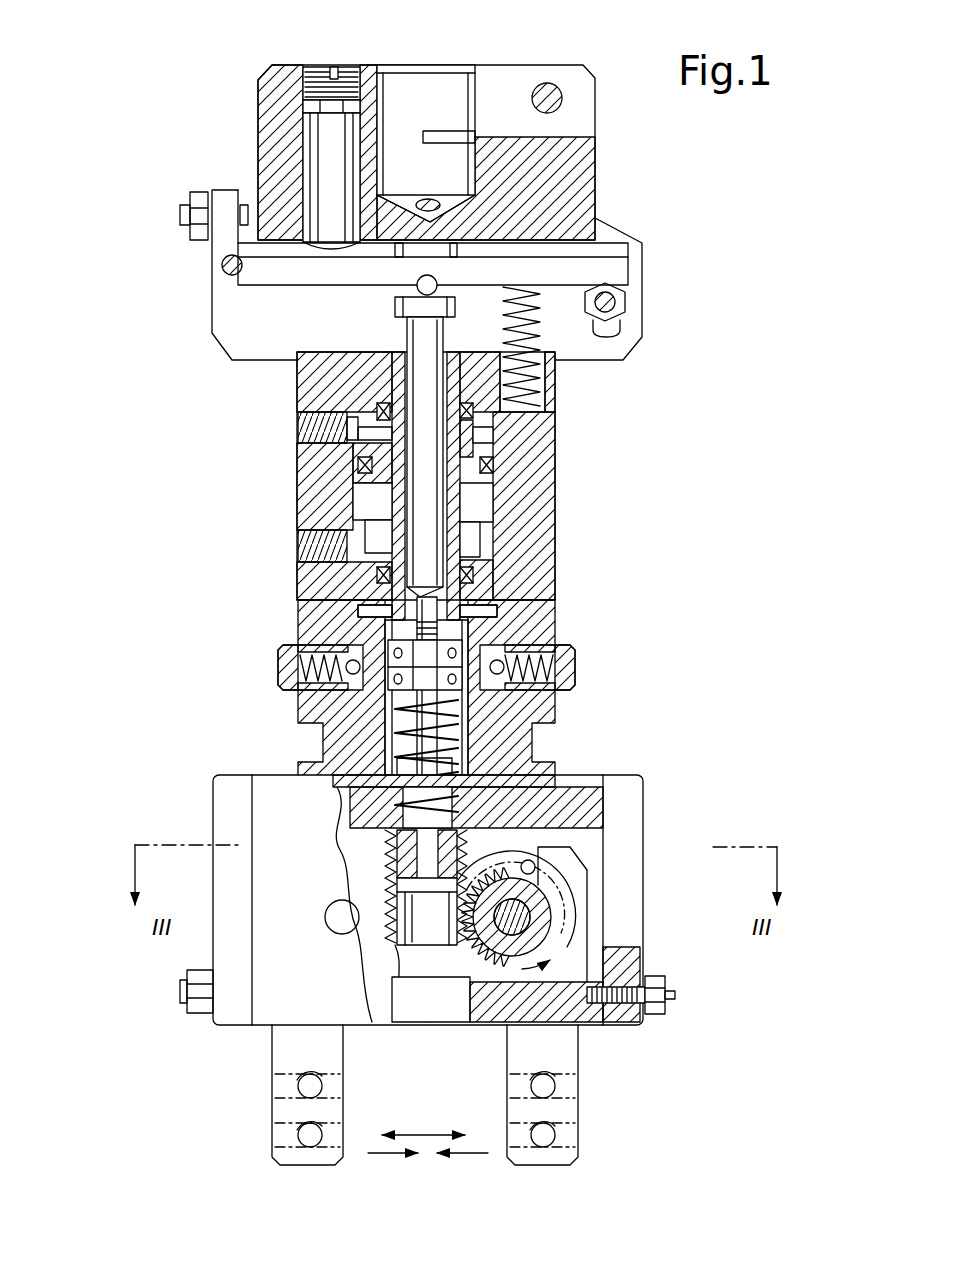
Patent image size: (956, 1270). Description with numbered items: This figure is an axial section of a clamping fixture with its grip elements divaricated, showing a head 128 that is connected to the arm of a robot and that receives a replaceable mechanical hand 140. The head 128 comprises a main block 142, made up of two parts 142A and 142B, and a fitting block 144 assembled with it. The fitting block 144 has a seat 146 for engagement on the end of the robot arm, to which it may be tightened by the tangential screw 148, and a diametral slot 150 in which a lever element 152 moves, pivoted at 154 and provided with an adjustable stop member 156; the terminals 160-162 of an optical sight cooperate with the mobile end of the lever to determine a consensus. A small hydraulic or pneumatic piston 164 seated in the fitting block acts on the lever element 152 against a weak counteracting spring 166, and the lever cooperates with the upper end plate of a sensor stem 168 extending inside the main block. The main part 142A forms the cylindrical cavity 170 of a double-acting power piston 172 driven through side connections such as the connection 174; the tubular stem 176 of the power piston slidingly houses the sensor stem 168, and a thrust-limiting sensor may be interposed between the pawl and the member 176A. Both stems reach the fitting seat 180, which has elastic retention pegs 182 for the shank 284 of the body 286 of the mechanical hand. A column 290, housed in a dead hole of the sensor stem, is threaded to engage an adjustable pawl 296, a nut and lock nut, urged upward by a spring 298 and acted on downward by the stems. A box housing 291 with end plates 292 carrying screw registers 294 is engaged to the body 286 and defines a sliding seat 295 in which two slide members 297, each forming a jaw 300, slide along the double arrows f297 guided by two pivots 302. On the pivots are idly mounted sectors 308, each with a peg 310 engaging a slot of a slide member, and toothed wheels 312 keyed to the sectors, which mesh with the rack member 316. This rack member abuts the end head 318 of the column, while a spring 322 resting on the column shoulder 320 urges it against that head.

The head 128 is at (605, 182).
The mechanical hand 140 is at (210, 955).
The main block 142 is at (391, 569).
The main part of the main block 142A is at (556, 458).
The lower part of the main block 142B is at (558, 578).
The fitting block 144 is at (275, 95).
The seat 146 is at (455, 90).
The tangential screw 148 is at (550, 95).
The diametral slot 150 is at (228, 320).
The lever element 152 is at (620, 265).
The pivot 154 is at (225, 272).
The adjustable stop member 156 is at (183, 205).
The terminals of an optical sight 160-162 is at (628, 296).
The small piston 164 is at (313, 157).
The counteracting spring 166 is at (543, 395).
The sensor stem 168 is at (415, 395).
The cylindrical cavity 170 is at (485, 510).
The power piston 172 is at (360, 445).
The side connection 174 is at (318, 555).
The stem of the power piston 176 is at (372, 590).
The member of the power piston stem 176A is at (360, 622).
The fitting seat 180 is at (472, 608).
The elastic retention pegs 182 is at (364, 657).
The shank 284 is at (464, 645).
The body 286 is at (534, 703).
The column 290 is at (472, 735).
The box housing 291 is at (592, 810).
The end plates 292 is at (228, 805).
The screw registers 294 is at (668, 997).
The sliding seat 295 is at (595, 858).
The adjustable pawl 296 is at (514, 662).
The slide members 297 is at (548, 1000).
The spring 298 is at (400, 738).
The jaws 300 is at (332, 1140).
The pivots 302 is at (340, 925).
The sectors 308 is at (560, 942).
The peg 310 is at (534, 865).
The toothed wheels 312 is at (532, 920).
The rack member 316 is at (377, 1000).
The end head 318 is at (455, 1000).
The shoulder 320 is at (398, 712).
The spring 322 is at (478, 762).
The double arrows f297 is at (432, 1158).